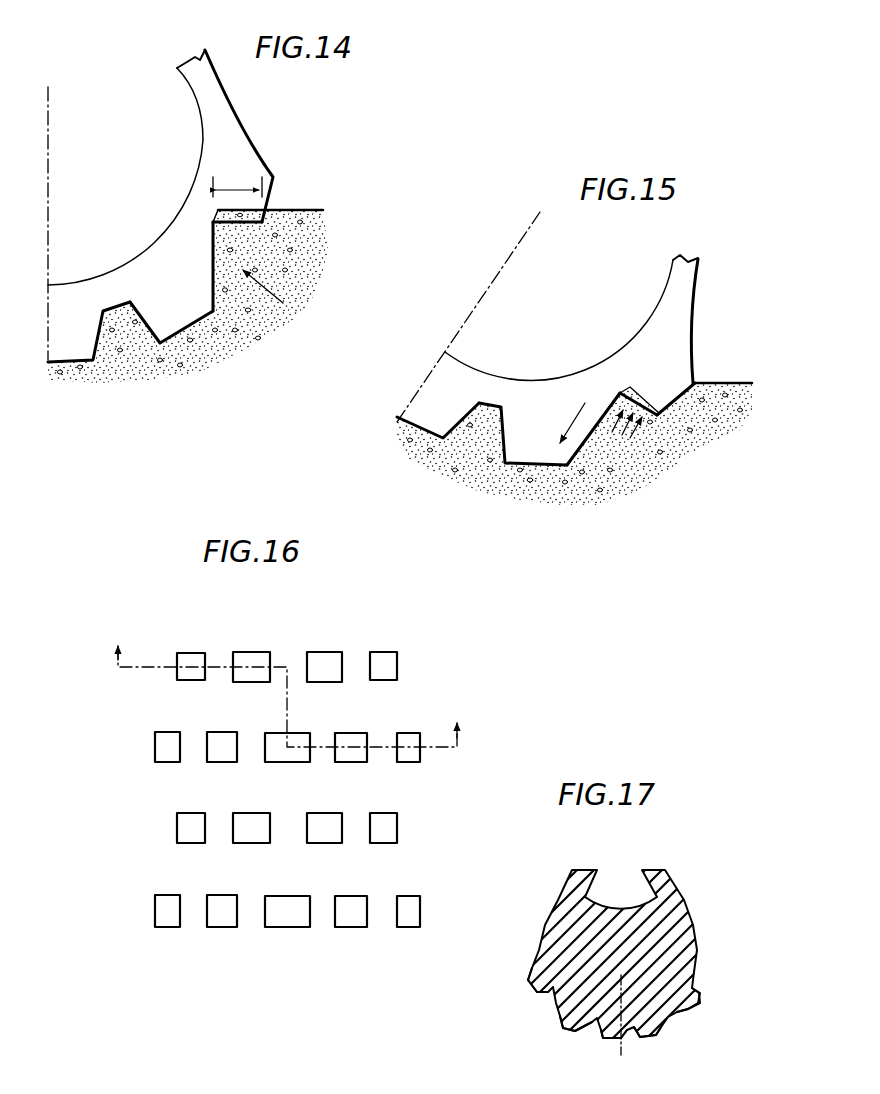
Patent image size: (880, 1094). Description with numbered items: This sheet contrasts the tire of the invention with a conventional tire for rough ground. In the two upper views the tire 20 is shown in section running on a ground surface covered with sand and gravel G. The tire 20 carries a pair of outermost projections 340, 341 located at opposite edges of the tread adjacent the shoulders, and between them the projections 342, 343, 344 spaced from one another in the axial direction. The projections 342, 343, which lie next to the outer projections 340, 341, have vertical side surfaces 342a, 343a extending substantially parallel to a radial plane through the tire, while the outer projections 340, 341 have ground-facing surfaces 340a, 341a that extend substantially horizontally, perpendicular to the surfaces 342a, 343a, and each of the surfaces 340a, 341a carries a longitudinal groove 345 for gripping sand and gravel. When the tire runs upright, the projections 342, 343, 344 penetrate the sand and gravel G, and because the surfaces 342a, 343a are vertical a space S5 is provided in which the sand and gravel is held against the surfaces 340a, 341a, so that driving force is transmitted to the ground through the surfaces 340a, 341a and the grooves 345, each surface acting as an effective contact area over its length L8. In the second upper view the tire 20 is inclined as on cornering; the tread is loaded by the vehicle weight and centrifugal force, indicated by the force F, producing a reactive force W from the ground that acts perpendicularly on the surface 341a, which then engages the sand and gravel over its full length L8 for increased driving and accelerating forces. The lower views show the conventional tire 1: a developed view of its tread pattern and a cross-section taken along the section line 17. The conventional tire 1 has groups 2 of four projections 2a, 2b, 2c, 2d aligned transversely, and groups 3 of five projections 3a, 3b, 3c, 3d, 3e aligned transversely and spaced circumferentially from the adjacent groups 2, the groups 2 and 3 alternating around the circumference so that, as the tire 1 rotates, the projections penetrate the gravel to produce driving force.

In FIG. 14, the tire 20 is at (160, 250).
In FIG. 15, the tire 20 is at (517, 393).
In FIG. 14, the sand and gravel G is at (307, 210).
In FIG. 15, the sand and gravel G is at (728, 382).
In FIG. 14, the projection 341 is at (273, 177).
In FIG. 15, the projection 341 is at (673, 400).
In FIG. 14, the projection 340 is at (306, 136).
In FIG. 14, the longitudinal groove 345 is at (258, 222).
In FIG. 15, the longitudinal groove 345 is at (658, 420).
In FIG. 14, the side surface 341a is at (240, 223).
In FIG. 15, the side surface 341a is at (645, 420).
In FIG. 14, the side surface 340a is at (315, 262).
In FIG. 14, the space S5 is at (278, 299).
In FIG. 14, the vertical side surface 343a is at (213, 280).
In FIG. 15, the vertical side surface 343a is at (576, 455).
In FIG. 14, the vertical side surface 342a is at (286, 290).
In FIG. 14, the projection 342 is at (204, 353).
In FIG. 14, the projection 343 is at (178, 320).
In FIG. 15, the projection 343 is at (537, 457).
In FIG. 14, the projection 344 is at (80, 343).
In FIG. 15, the projection 344 is at (430, 413).
In FIG. 14, the length L8 is at (237, 188).
In FIG. 15, the force direction F is at (569, 420).
In FIG. 15, the reactive force W is at (622, 433).
In FIG. 16, the section line 17- 17 is at (289, 681).
In FIG. 16, the group of projections 2 is at (256, 734).
In FIG. 16, the projection 2a is at (190, 652).
In FIG. 17, the projection 2a is at (532, 980).
In FIG. 16, the projection 2b is at (250, 651).
In FIG. 17, the projection 2b is at (560, 1024).
In FIG. 16, the projection 2c is at (324, 651).
In FIG. 16, the projection 2d is at (384, 651).
In FIG. 16, the group of projections 3 is at (265, 825).
In FIG. 16, the projection 3a is at (168, 731).
In FIG. 16, the projection 3b is at (222, 731).
In FIG. 16, the projection 3c is at (300, 732).
In FIG. 17, the projection 3c is at (612, 1040).
In FIG. 16, the projection 3d is at (357, 732).
In FIG. 17, the projection 3d is at (655, 1037).
In FIG. 16, the projection 3e is at (407, 732).
In FIG. 17, the projection 3e is at (690, 998).
In FIG. 17, the conventional tire 1 is at (693, 917).